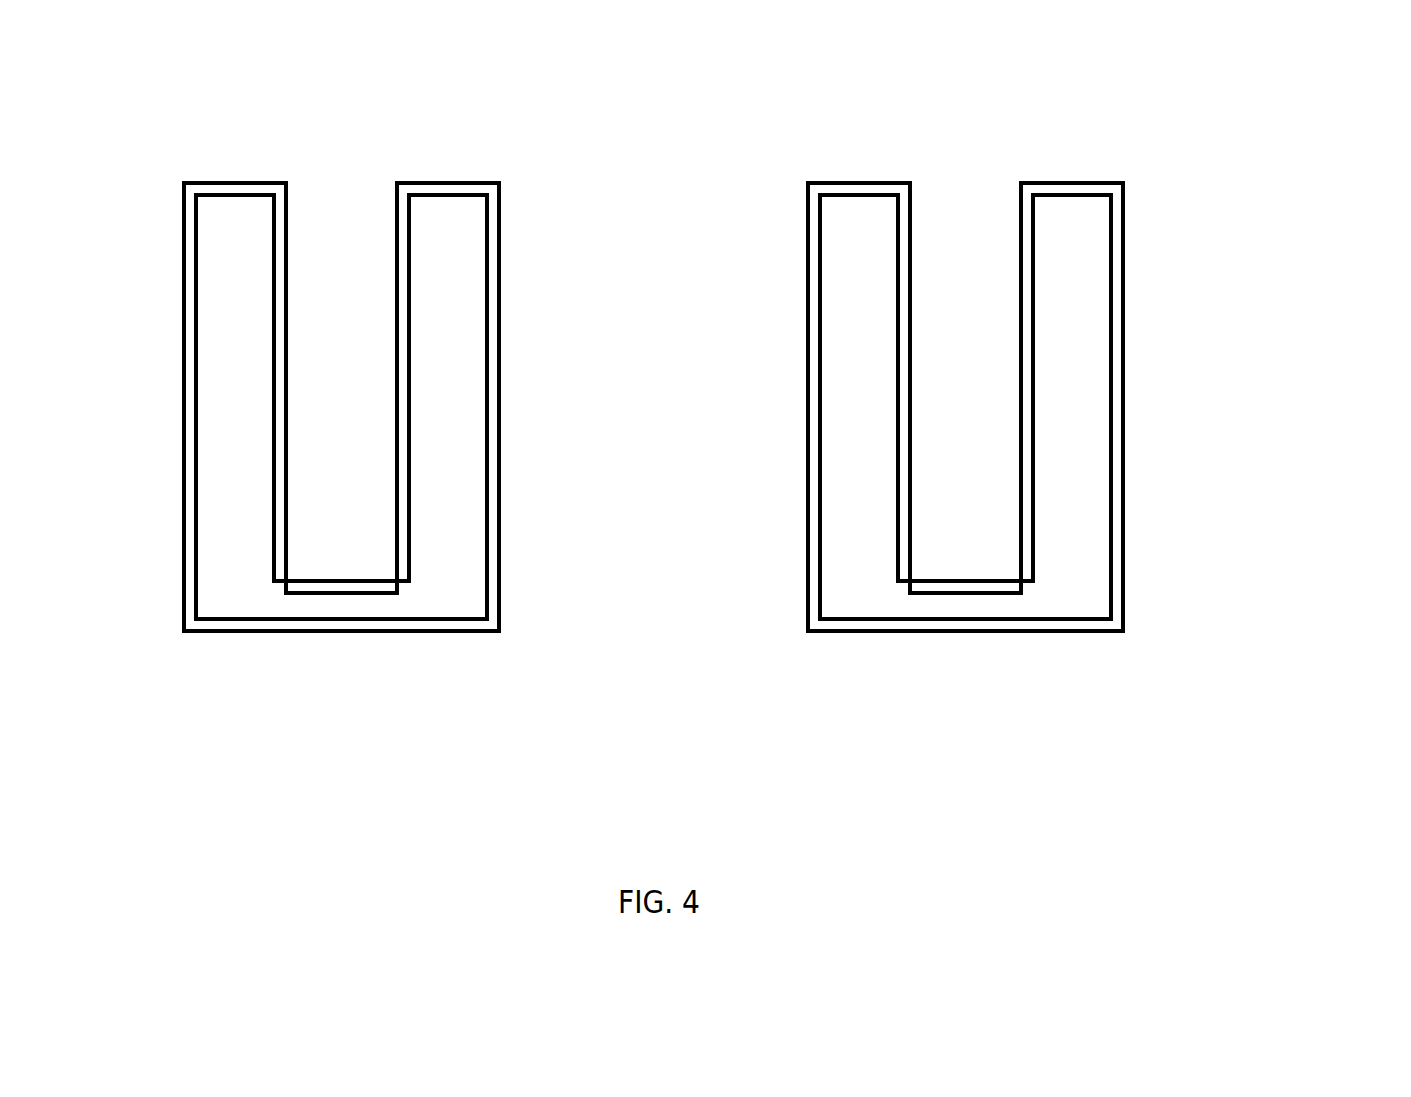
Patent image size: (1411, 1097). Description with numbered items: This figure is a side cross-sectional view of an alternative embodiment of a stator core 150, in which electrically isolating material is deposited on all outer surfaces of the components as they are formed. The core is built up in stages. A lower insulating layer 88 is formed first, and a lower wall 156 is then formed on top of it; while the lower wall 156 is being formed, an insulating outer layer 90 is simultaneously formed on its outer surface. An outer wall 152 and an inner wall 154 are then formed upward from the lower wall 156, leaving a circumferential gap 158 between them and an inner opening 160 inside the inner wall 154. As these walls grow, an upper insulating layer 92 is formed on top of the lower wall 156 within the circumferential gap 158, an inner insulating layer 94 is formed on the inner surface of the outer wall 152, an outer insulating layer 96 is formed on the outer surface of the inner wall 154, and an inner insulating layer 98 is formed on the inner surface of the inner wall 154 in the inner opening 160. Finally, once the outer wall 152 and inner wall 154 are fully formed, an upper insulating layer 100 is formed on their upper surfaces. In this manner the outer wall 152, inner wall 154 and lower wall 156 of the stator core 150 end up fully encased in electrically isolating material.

The lower insulating layer 88 is at (275, 633).
The insulating outer layer 90 is at (190, 500).
The upper insulating layer 92 is at (305, 585).
The inner insulating layer 94 is at (280, 403).
The outer insulating layer 96 is at (403, 313).
The inner insulating layer 98 is at (496, 430).
The upper insulating layer 100 is at (243, 181).
The stator core 150 is at (1223, 167).
The outer wall 152 is at (227, 390).
The inner wall 154 is at (462, 318).
The lower wall 156 is at (323, 603).
The circumferential gap 158 is at (330, 210).
The inner opening 160 is at (647, 197).